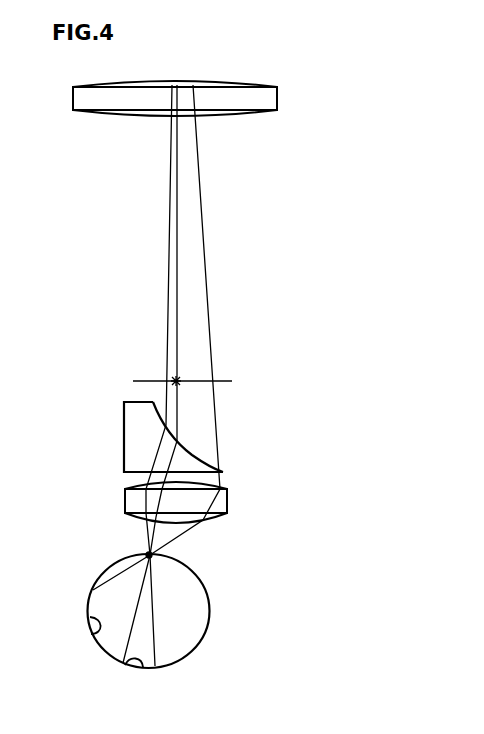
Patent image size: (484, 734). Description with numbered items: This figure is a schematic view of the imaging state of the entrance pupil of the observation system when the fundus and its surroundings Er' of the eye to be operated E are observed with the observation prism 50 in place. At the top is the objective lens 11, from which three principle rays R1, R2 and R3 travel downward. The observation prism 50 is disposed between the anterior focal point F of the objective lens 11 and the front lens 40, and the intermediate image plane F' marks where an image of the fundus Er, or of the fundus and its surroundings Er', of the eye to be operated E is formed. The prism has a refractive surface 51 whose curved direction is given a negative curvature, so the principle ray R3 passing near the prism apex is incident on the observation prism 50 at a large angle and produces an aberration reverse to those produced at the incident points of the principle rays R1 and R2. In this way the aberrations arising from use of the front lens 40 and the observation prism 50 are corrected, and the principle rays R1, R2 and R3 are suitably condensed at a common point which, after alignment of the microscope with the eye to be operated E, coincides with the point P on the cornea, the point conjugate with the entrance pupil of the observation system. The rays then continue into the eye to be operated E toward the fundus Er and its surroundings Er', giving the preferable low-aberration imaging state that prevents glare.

The objective lens 11 is at (277, 100).
The principle ray R1 is at (168, 275).
The principle ray R2 is at (177, 347).
The principle ray R3 is at (209, 322).
The anterior focal point F is at (198, 372).
The intermediate image plane F' is at (252, 405).
The observation prism 50 is at (123, 444).
The refractive surface 51 is at (206, 445).
The front lens 40 is at (125, 508).
The point on cornea P is at (160, 567).
The eye to be operated E is at (205, 632).
The fundus and its surroundings Er' is at (68, 629).
The fundus Er is at (111, 674).